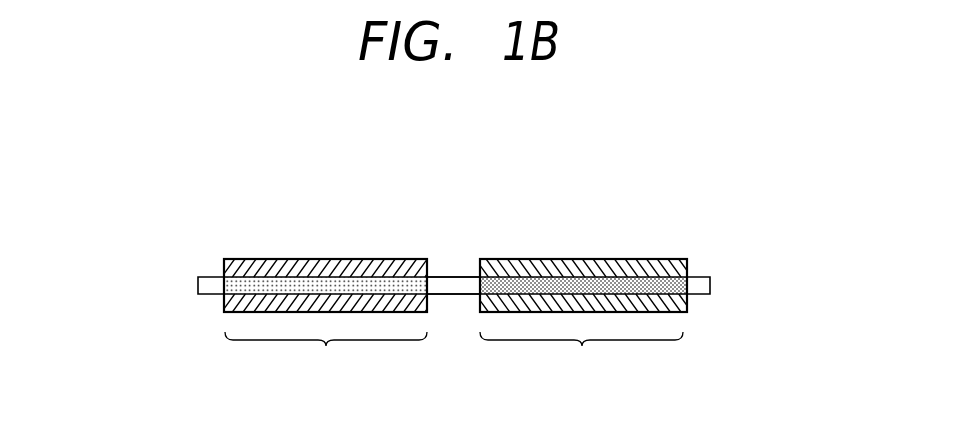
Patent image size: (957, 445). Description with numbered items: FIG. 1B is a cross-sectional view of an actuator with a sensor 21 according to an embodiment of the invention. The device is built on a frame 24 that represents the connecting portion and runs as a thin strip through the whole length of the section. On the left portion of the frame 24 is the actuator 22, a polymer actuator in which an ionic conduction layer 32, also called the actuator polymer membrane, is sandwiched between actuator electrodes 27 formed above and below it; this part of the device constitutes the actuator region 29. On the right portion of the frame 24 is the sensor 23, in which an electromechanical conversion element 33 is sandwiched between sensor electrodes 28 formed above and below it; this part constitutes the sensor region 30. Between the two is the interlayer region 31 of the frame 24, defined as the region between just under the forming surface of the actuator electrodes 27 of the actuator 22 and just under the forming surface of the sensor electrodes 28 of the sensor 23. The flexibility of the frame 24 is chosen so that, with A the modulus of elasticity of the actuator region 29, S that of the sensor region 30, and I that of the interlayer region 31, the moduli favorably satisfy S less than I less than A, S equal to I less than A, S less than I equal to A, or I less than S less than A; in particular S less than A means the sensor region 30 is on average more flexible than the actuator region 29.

The actuator with a sensor 21 is at (203, 123).
The actuator 22 is at (218, 232).
The sensor 23 is at (700, 232).
The frame 24 is at (210, 288).
The actuator electrodes 27 is at (397, 302).
The sensor electrodes 28 is at (568, 300).
The actuator region 29 is at (286, 269).
The sensor region 30 is at (627, 269).
The interlayer region 31 is at (452, 294).
The ionic conduction layer 32 is at (275, 282).
The electromechanical conversion element 33 is at (643, 282).